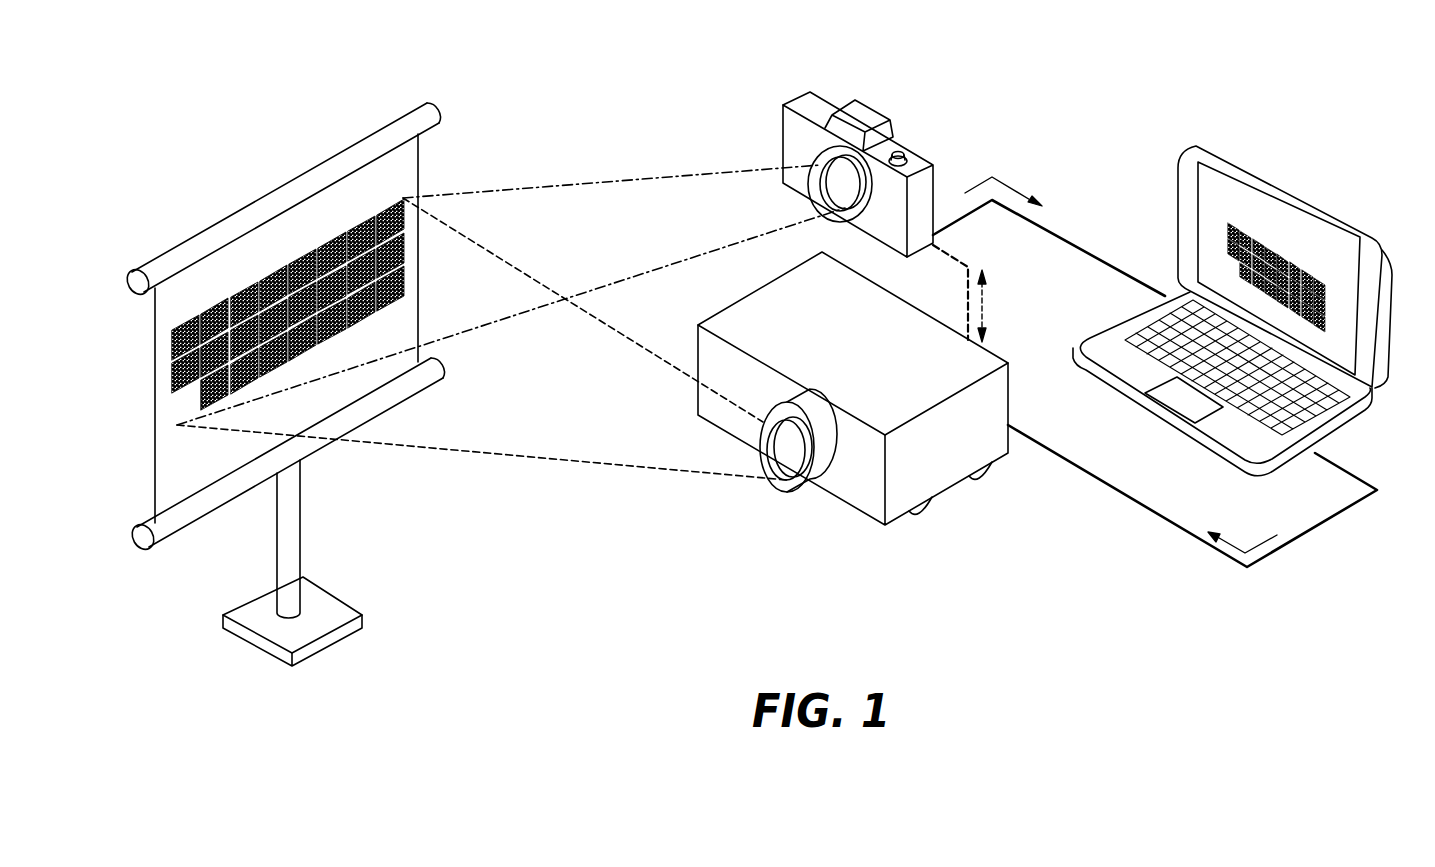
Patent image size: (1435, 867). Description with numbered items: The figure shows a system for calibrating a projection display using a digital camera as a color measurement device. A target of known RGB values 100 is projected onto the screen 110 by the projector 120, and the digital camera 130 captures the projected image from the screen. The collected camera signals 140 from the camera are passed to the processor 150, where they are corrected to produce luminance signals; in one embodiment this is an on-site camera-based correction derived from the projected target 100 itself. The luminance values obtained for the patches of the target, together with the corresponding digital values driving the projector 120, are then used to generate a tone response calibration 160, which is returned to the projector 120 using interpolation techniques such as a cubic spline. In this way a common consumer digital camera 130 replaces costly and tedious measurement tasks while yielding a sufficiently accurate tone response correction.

The target of known RGB values 100 is at (387, 205).
The screen 110 is at (393, 115).
The projector 120 is at (943, 482).
The digital camera 130 is at (822, 93).
The collected camera signals 140 is at (970, 265).
The processor 150 is at (1385, 332).
The tone response calibration 160 is at (1285, 548).